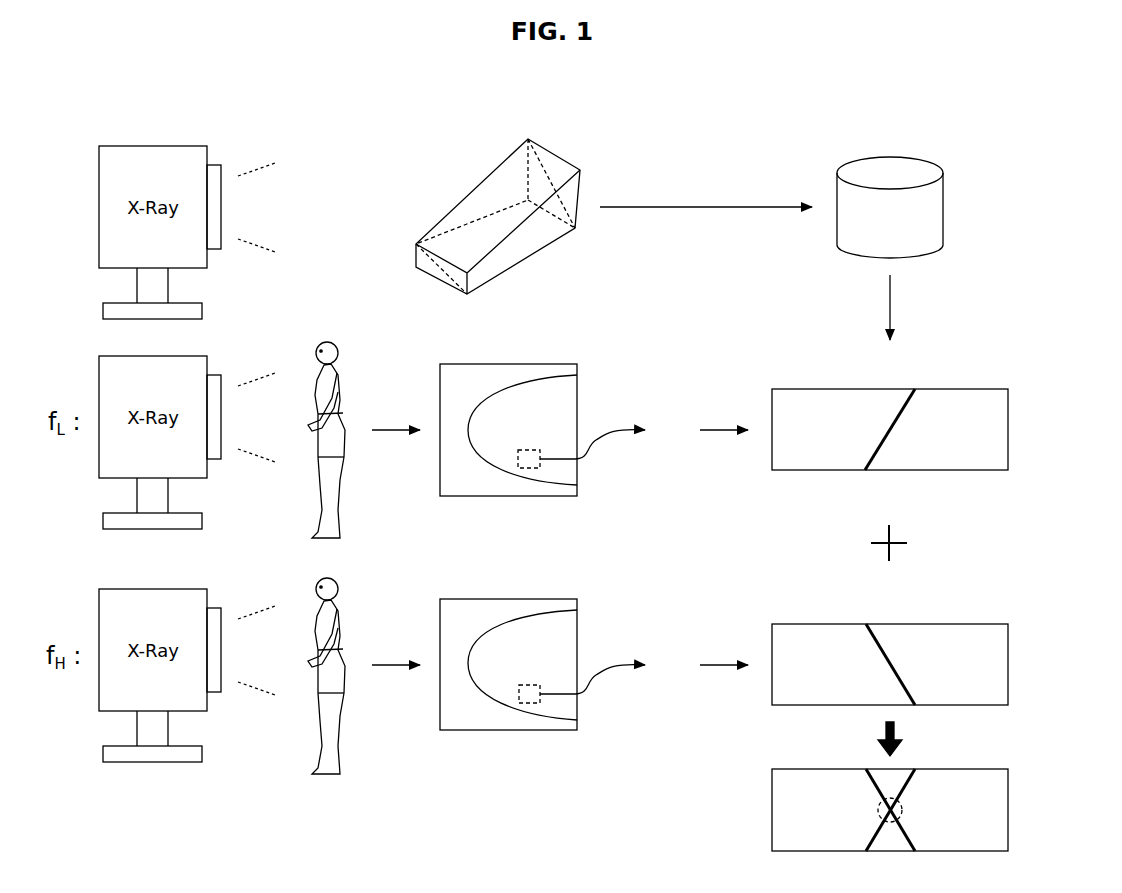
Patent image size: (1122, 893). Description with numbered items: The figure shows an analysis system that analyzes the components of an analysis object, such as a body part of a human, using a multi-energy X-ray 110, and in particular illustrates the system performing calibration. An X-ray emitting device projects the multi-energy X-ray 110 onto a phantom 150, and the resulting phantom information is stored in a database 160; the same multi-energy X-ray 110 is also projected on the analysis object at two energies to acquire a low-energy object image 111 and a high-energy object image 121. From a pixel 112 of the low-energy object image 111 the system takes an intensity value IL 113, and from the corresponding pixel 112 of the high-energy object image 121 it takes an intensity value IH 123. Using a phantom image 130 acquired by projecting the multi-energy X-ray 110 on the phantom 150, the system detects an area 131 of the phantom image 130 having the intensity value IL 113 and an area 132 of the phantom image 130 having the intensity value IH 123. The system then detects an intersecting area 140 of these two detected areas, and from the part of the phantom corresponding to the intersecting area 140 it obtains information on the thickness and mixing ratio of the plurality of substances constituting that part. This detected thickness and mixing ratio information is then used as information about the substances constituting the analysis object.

The multi-energy X-ray 110 is at (152, 146).
The low-energy object image 111 is at (485, 364).
The pixel 112 is at (532, 684).
The intensity value IL 113 is at (666, 410).
The high-energy object image 121 is at (485, 599).
The intensity value IH 123 is at (666, 645).
The phantom image 130 is at (1008, 427).
The area 131 is at (887, 430).
The area 132 is at (890, 662).
The intersecting area 140 is at (898, 808).
The phantom 150 is at (550, 152).
The database 160 is at (889, 157).